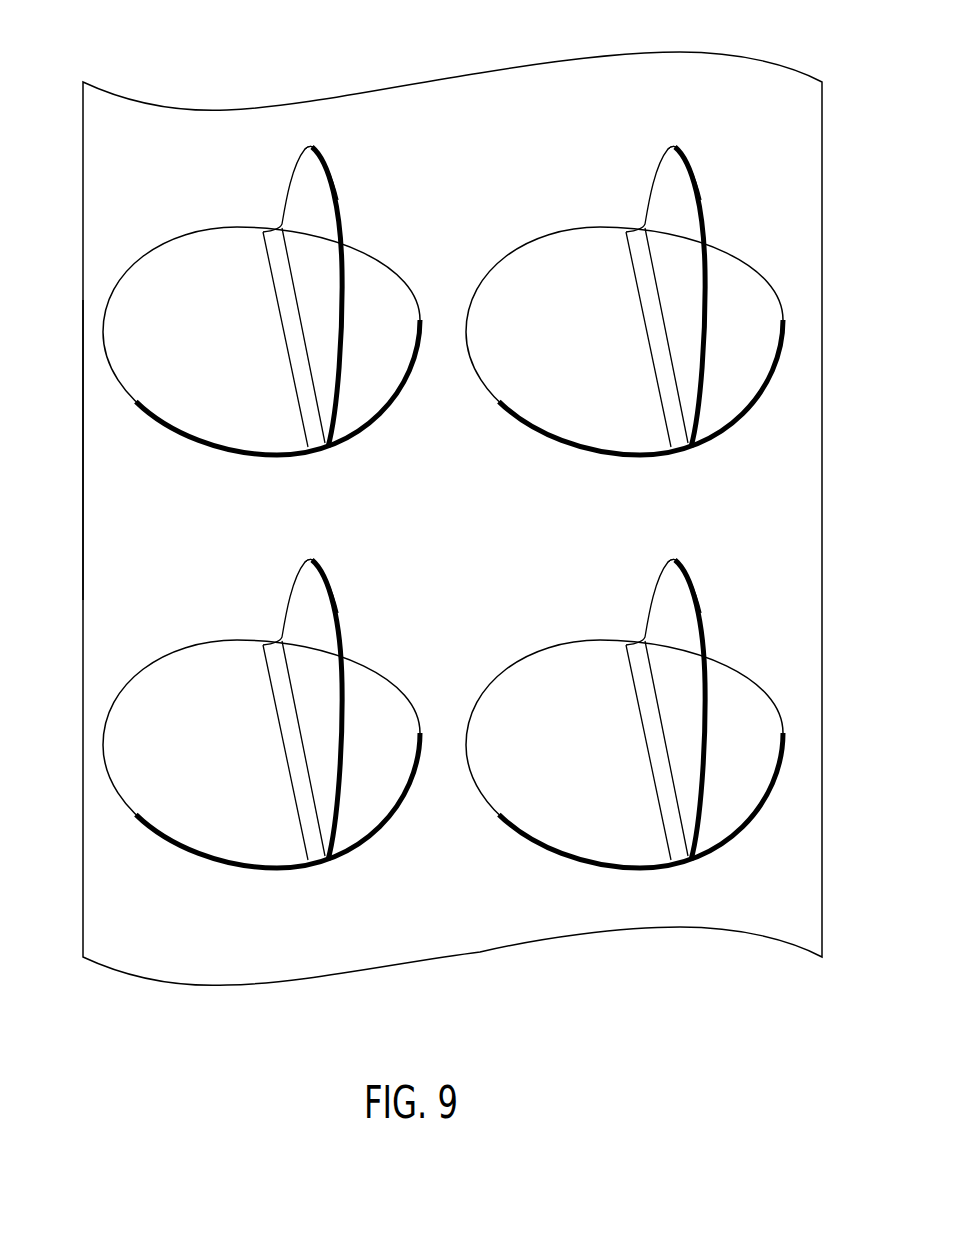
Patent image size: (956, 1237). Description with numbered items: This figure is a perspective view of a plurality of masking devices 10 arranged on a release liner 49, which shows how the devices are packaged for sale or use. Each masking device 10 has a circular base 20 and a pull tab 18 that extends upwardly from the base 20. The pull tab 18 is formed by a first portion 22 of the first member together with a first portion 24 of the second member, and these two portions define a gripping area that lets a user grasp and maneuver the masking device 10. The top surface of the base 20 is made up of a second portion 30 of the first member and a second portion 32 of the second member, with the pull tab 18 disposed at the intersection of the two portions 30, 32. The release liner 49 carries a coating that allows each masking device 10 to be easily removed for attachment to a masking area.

The masking device 10 is at (217, 130).
The release liner 49 is at (82, 440).
The base 20 is at (180, 458).
The first portion of the first member 22 is at (300, 186).
The first portion of the second member 24 is at (345, 250).
The pull tab 18 is at (349, 172).
The second portion of the first member 30 is at (183, 341).
The second portion of the second member 32 is at (744, 775).